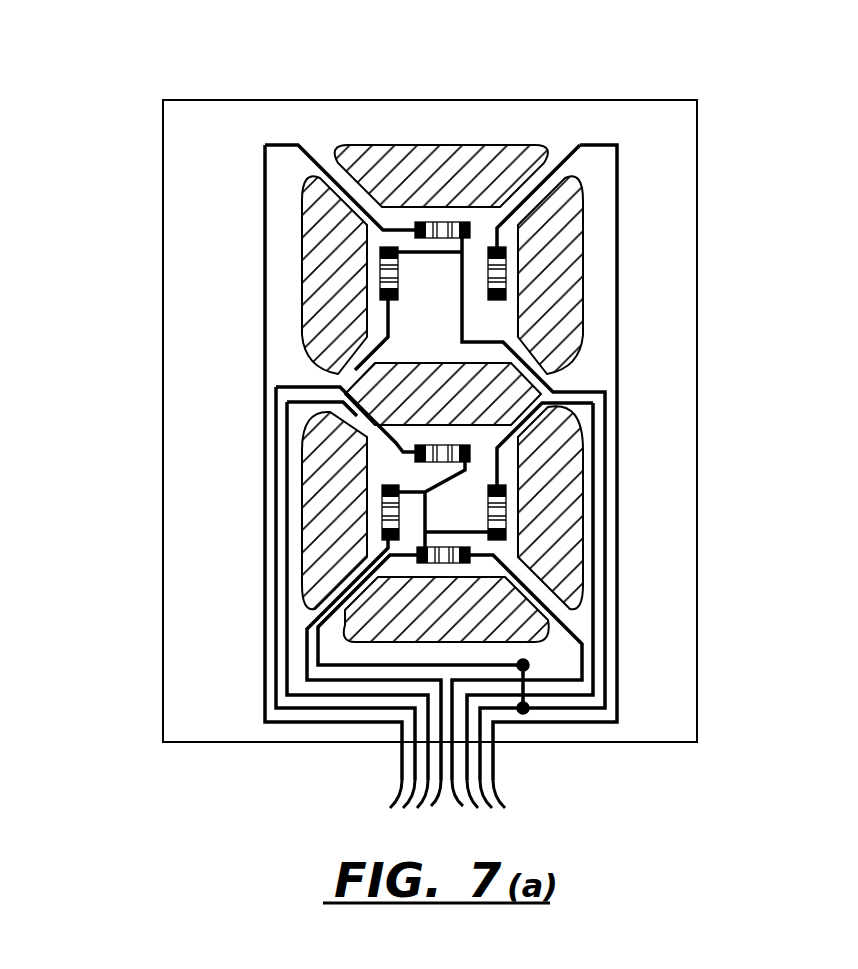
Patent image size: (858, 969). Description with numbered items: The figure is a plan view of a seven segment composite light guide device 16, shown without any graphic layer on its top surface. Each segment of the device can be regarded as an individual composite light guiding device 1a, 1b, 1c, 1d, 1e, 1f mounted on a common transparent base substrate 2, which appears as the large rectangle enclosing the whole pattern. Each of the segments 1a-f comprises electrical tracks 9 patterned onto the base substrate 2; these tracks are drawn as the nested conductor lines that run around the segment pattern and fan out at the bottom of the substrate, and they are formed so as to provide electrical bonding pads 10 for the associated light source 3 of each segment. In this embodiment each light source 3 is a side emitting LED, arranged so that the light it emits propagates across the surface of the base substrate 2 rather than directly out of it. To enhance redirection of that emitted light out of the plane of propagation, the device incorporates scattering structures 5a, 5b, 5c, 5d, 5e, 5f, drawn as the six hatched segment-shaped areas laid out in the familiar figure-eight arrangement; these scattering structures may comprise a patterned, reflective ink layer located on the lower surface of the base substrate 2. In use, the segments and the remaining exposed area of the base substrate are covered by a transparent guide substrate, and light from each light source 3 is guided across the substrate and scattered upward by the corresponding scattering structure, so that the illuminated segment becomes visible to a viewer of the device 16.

The composite light guiding device 1a is at (350, 132).
The composite light guiding device 1b is at (630, 266).
The composite light guiding device 1c is at (630, 539).
The composite light guiding device 1d is at (552, 646).
The composite light guiding device 1e is at (247, 549).
The composite light guiding device 1f is at (327, 388).
The base substrate 2 is at (217, 728).
The light source 3 is at (490, 270).
The scattering structure 5a is at (428, 170).
The scattering structure 5b is at (552, 332).
The scattering structure 5c is at (556, 455).
The scattering structure 5d is at (330, 633).
The scattering structure 5e is at (340, 416).
The scattering structure 5f is at (431, 382).
The electrical tracks 9 is at (447, 808).
The electrical bonding pads 10 is at (490, 290).
The seven segment composite light guide device 16 is at (537, 88).